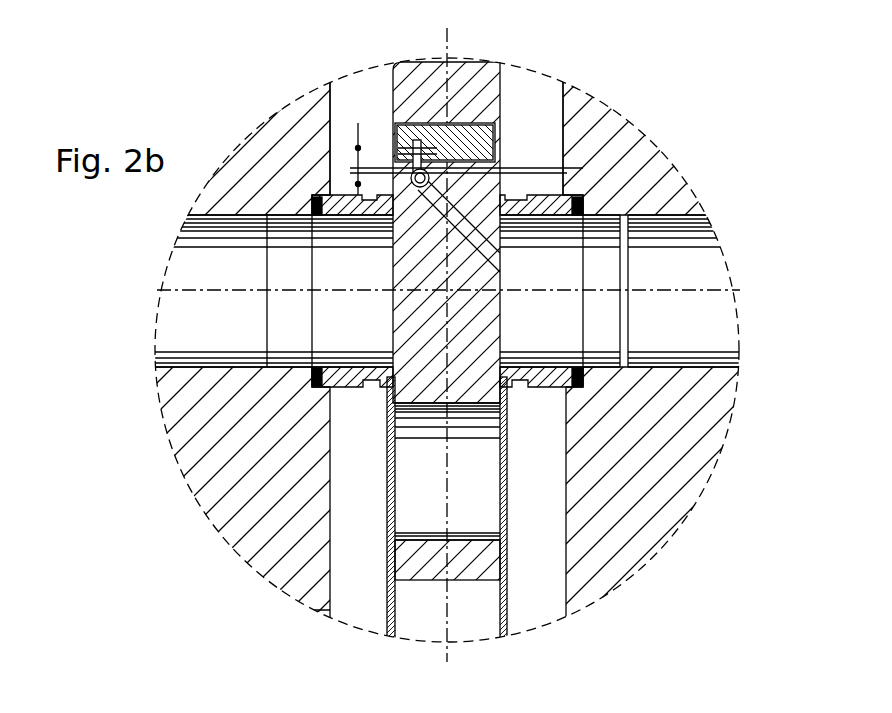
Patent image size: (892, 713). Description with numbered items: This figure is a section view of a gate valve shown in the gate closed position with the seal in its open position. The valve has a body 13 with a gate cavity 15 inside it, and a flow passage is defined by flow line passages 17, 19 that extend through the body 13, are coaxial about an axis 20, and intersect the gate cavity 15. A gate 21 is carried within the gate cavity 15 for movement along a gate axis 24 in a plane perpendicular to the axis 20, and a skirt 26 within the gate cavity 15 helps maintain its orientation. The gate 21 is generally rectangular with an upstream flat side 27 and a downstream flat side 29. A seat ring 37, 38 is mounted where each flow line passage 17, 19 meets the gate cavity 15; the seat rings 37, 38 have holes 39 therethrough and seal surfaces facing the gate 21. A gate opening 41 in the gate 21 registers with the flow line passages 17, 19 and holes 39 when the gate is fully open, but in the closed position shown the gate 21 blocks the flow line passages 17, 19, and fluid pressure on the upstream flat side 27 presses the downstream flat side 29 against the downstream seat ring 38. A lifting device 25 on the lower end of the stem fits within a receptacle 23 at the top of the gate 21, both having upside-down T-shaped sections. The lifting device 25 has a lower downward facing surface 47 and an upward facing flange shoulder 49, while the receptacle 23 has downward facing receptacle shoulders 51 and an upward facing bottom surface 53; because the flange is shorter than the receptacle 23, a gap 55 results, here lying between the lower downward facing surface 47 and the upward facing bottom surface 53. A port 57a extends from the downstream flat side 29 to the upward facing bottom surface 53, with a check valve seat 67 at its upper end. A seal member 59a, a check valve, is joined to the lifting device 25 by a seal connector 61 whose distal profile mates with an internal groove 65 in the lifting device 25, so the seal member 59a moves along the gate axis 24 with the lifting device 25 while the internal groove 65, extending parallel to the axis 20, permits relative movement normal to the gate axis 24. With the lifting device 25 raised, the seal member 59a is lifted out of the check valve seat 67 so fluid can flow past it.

The body 13 is at (677, 457).
The gate cavity 15 is at (313, 607).
The flow line passage 17 is at (172, 352).
The flow line passage 19 is at (722, 325).
The axis 20 is at (695, 287).
The gate 21 is at (502, 309).
The receptacle 23 is at (583, 168).
The gate axis 24 is at (447, 477).
The lifting device 25 is at (577, 90).
The skirt 26 is at (390, 602).
The upstream flat side 27 is at (390, 326).
The downstream flat side 29 is at (503, 332).
The seat ring 37 is at (313, 392).
The seat ring 38 is at (567, 420).
The holes 39 is at (620, 358).
The gate opening 41 is at (470, 497).
The lower downward facing surface 47 is at (583, 197).
The upward facing flange shoulder 49 is at (458, 105).
The downward facing receptacle shoulders 51 is at (503, 140).
The upward facing bottom surface 53 is at (500, 152).
The gap 55 is at (358, 133).
The port 57a is at (390, 263).
The seal member 59a is at (411, 123).
The seal connector 61 is at (423, 148).
The internal groove 65 is at (358, 100).
The check valve seat 67 is at (383, 236).